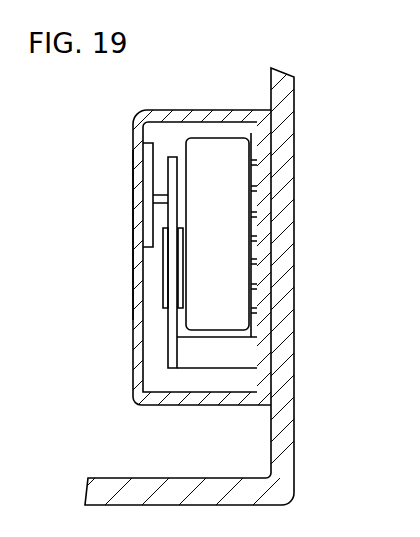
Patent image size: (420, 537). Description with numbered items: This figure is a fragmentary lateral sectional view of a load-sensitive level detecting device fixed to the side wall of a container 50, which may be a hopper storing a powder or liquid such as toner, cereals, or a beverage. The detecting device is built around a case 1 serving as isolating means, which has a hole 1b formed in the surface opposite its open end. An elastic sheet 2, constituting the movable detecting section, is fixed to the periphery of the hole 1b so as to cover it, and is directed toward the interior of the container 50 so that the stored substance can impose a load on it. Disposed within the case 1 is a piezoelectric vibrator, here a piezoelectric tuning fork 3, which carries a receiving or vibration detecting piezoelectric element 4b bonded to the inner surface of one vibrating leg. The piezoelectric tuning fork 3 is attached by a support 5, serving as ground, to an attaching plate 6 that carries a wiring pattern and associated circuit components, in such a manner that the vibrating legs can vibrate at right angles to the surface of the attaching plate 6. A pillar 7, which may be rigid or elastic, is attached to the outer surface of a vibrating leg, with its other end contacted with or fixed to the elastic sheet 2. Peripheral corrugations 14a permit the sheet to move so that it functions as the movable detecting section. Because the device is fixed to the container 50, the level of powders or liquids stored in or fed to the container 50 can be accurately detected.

The case 1 is at (158, 406).
The hole 1b is at (143, 232).
The elastic sheet 2 is at (147, 170).
The piezoelectric tuning fork 3 is at (168, 338).
The receiving piezoelectric element 4b is at (163, 275).
The support 5 is at (218, 370).
The attaching plate 6 is at (262, 170).
The pillar 7 is at (157, 198).
The peripheral corrugations 14a is at (184, 262).
The container 50 is at (293, 436).